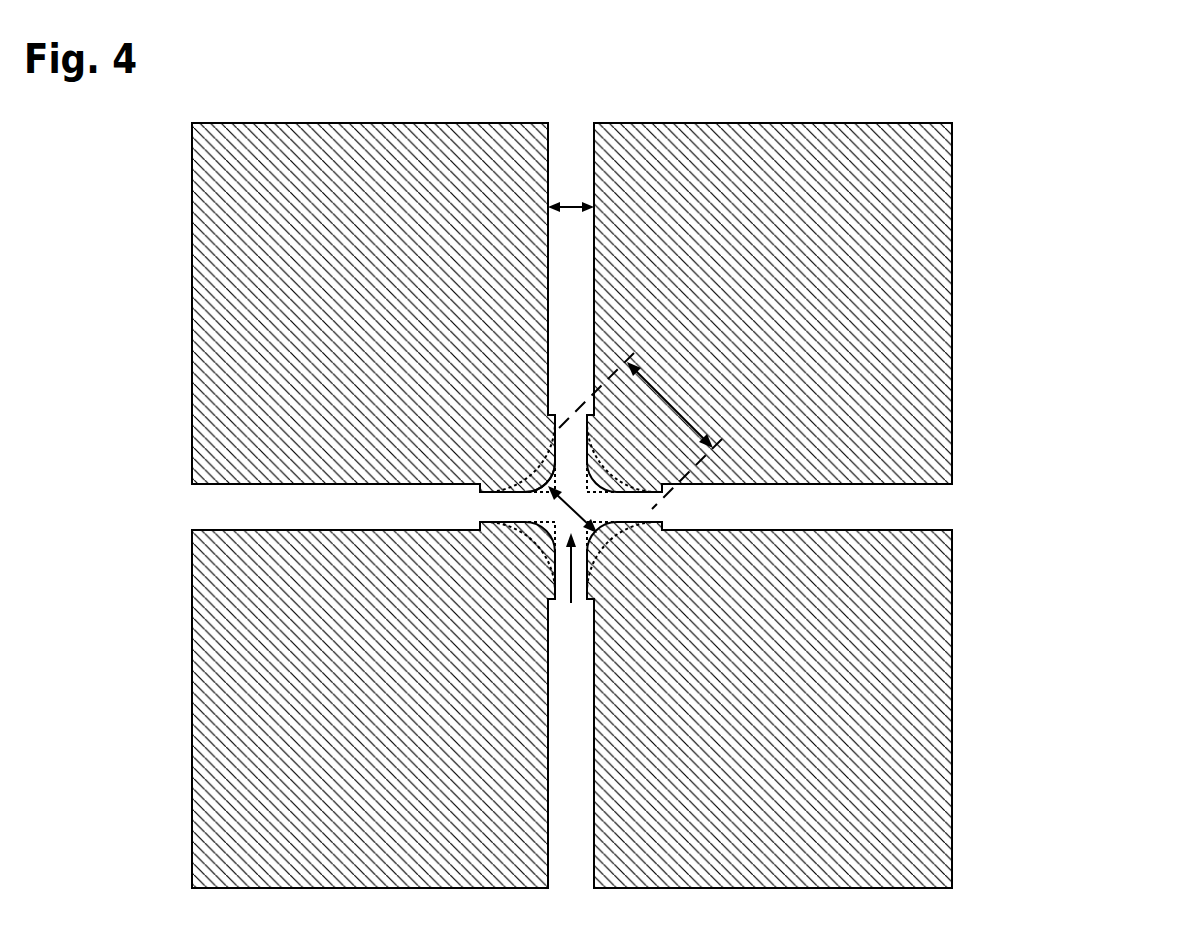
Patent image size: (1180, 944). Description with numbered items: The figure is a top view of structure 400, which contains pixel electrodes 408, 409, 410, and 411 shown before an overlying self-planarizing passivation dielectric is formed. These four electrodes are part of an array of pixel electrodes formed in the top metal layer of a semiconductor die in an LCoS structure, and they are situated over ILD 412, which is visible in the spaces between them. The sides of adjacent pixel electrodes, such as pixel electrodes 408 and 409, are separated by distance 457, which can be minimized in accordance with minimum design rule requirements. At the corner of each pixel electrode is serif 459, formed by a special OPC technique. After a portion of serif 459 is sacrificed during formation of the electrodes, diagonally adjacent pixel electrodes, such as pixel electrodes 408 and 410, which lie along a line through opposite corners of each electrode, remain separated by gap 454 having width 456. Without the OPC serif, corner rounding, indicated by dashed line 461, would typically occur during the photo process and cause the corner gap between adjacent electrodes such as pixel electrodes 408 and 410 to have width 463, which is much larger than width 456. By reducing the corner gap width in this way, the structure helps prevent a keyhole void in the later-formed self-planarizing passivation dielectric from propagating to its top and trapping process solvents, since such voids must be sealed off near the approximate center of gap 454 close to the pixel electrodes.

The structure 400 is at (1097, 117).
The pixel electrode 408 is at (217, 257).
The pixel electrode 409 is at (927, 257).
The pixel electrode 410 is at (927, 683).
The pixel electrode 411 is at (217, 683).
The ILD 412 is at (210, 507).
The gap 454 is at (571, 584).
The width 456 is at (570, 505).
The distance 457 is at (575, 207).
The serif 459 is at (545, 455).
The dashed line 461 is at (518, 475).
The width 463 is at (683, 418).